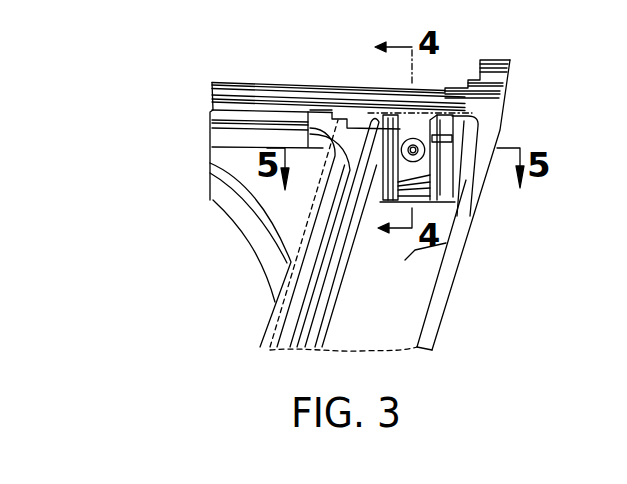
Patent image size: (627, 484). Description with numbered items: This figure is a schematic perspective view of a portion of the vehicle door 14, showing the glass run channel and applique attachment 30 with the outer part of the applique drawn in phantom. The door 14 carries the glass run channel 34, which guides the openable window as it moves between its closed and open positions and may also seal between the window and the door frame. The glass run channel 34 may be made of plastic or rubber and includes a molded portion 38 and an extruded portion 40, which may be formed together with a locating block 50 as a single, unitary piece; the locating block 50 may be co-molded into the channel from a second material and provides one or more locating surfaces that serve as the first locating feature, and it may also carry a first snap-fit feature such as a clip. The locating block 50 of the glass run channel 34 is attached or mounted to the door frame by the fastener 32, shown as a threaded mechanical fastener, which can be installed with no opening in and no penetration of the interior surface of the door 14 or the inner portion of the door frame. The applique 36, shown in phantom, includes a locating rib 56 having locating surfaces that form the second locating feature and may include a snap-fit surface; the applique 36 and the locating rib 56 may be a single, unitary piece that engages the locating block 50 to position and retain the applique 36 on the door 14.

The door 14 is at (190, 128).
The glass run channel and applique attachment 30 is at (425, 130).
The fastener 32 is at (424, 152).
The glass run channel 34 is at (333, 98).
The applique 36 is at (390, 305).
The molded portion 38 is at (363, 120).
The extruded portion 40 is at (260, 110).
The locating block 50 is at (413, 128).
The locating rib 56 is at (402, 158).